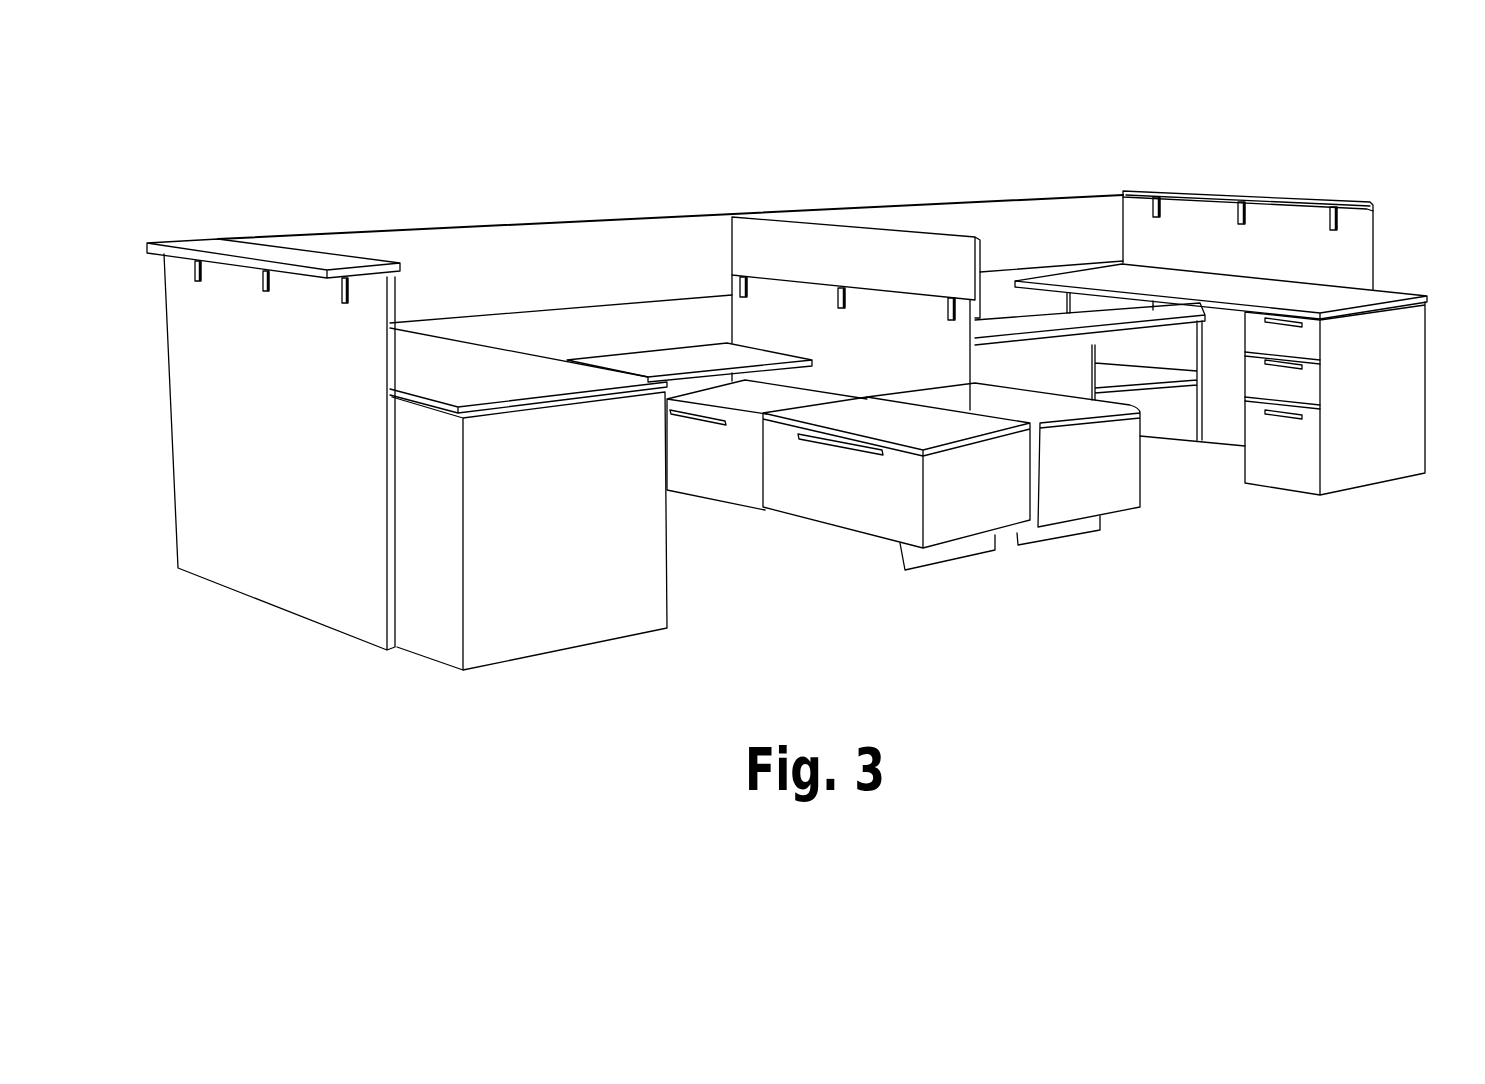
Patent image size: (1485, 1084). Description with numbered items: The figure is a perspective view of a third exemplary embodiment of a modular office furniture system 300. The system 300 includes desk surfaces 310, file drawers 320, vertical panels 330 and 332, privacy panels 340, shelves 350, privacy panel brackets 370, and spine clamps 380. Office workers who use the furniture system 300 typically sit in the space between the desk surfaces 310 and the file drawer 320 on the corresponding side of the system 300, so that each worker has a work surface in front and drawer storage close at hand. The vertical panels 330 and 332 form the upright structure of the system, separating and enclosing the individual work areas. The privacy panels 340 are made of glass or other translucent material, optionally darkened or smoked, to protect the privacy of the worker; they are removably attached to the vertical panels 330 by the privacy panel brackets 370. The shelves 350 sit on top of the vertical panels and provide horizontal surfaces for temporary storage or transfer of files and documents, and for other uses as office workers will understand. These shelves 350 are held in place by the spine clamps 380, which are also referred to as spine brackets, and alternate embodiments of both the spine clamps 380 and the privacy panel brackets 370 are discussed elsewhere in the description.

The modular office furniture system 300 is at (356, 121).
The desk surfaces 310 is at (660, 363).
The file drawers 320 is at (733, 472).
The vertical panels 330 is at (312, 573).
The vertical panels 332 is at (532, 245).
The privacy panels 340 is at (955, 250).
The shelves 350 is at (326, 260).
The privacy panel brackets 370 is at (950, 319).
The spine clamps 380 is at (343, 283).